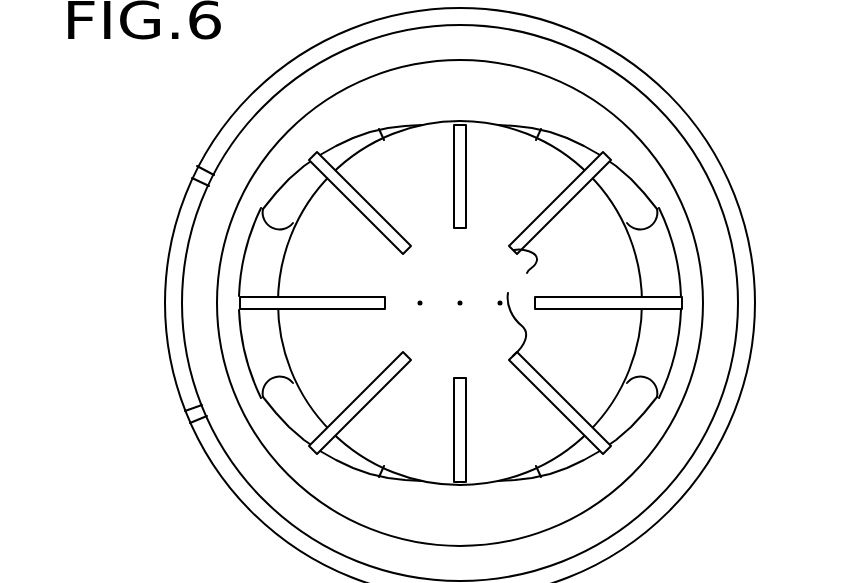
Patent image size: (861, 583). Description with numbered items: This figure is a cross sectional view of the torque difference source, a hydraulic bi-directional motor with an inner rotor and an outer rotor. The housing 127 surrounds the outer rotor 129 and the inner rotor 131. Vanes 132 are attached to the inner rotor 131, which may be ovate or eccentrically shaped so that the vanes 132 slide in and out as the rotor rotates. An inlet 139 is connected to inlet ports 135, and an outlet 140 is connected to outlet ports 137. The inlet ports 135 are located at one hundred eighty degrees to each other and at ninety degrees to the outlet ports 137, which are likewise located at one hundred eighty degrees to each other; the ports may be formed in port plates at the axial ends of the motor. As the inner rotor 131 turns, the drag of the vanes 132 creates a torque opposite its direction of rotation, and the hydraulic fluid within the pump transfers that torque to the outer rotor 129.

The housing 127 is at (663, 90).
The outer rotor 129 is at (650, 180).
The inner rotor 131 is at (613, 270).
The vanes 132 is at (545, 297).
The ports 135 is at (298, 188).
The ports 137 is at (621, 188).
The inlet 139 is at (197, 180).
The outlet 140 is at (195, 416).